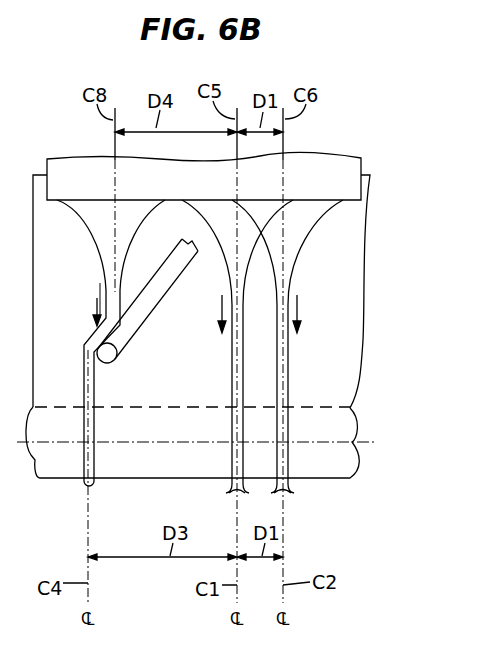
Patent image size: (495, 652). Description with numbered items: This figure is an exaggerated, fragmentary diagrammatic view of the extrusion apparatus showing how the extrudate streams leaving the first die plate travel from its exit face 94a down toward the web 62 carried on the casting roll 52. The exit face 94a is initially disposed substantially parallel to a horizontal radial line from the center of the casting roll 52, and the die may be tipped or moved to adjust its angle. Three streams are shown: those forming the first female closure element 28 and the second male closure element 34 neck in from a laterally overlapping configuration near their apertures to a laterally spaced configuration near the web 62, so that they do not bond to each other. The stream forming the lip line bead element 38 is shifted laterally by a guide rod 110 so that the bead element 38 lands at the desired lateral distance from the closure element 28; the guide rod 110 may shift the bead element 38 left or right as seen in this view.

The web 62 is at (33, 273).
The exit face 94a is at (358, 210).
The casting roll 52 is at (28, 470).
The bead element 38 is at (82, 353).
The guide rod 110 is at (172, 285).
The first female closure element 28 is at (232, 369).
The second male closure element 34 is at (289, 345).